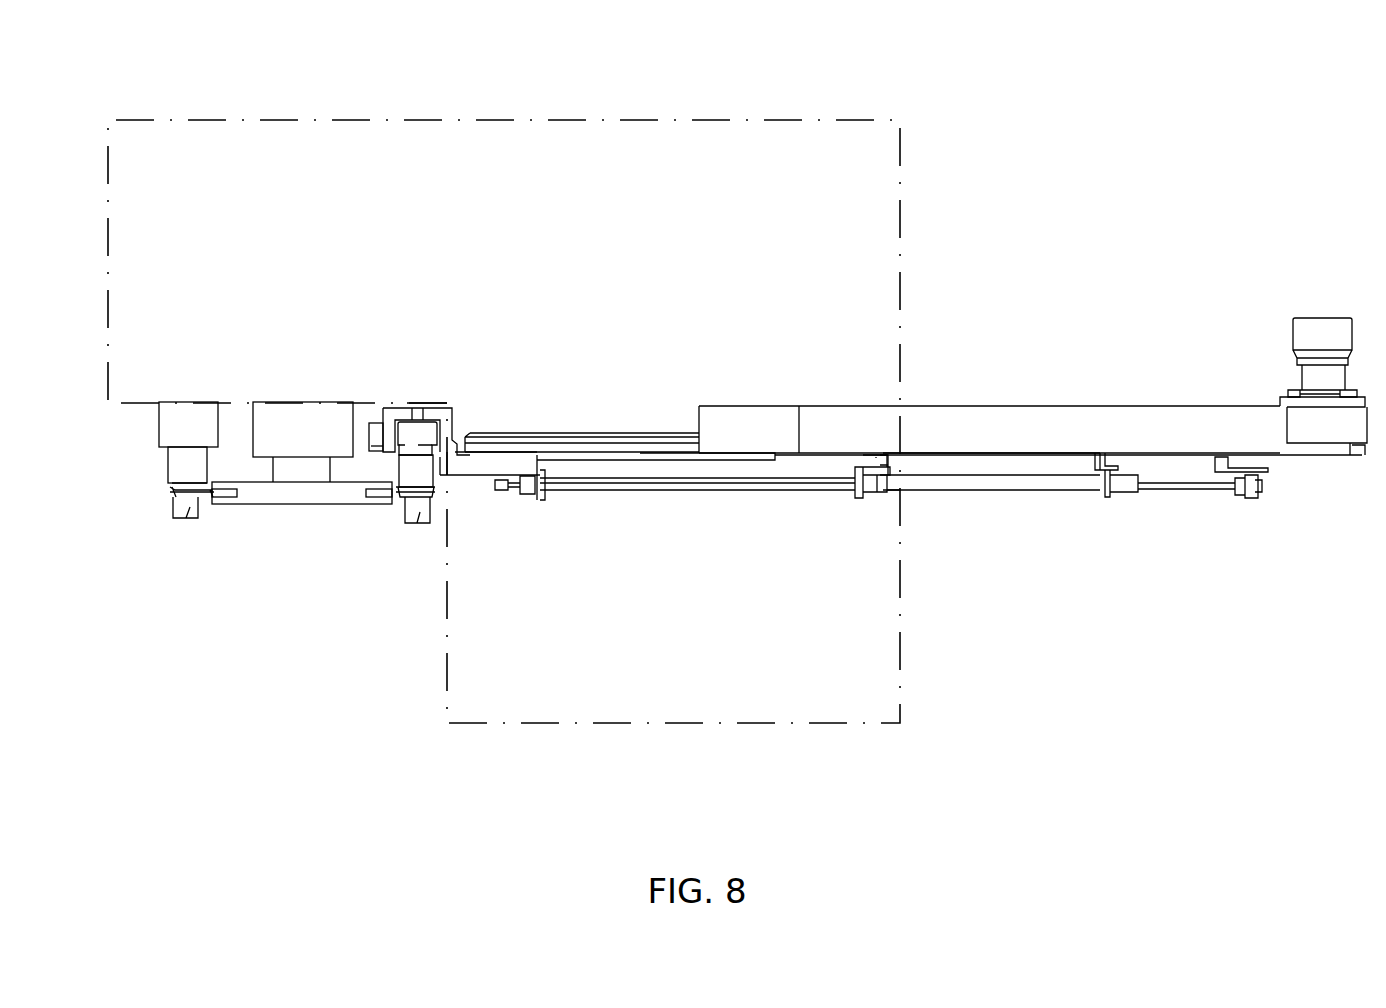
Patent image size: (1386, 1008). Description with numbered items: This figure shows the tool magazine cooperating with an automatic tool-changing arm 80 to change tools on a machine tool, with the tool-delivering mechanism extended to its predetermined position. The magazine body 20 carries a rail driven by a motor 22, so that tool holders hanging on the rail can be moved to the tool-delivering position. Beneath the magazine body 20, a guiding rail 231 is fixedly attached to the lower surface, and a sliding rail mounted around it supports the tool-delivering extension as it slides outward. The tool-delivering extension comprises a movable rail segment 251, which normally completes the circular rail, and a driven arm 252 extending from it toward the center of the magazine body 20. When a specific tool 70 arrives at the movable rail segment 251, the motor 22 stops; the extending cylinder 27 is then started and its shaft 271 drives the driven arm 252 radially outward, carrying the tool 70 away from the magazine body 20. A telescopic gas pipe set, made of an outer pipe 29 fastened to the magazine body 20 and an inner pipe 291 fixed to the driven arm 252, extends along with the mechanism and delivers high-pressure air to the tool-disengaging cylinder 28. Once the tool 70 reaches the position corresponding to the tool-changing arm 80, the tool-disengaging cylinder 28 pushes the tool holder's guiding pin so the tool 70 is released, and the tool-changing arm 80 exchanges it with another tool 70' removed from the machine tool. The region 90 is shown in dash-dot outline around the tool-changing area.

The enclosure region 90 is at (284, 135).
The another tool 70' is at (188, 496).
The tool-changing arm 80 is at (300, 447).
The tool 70 is at (416, 507).
The tool-disengaging cylinder 28 is at (382, 410).
The movable rail segment 251 is at (433, 410).
The driven arm 252 is at (473, 472).
The guiding rail 231 is at (594, 440).
The inner pipe 291 is at (600, 490).
The shaft 271 is at (723, 480).
The extending cylinder 27 is at (1008, 487).
The outer pipe 29 is at (1160, 488).
The magazine body 20 is at (1130, 415).
The motor 22 is at (1322, 322).